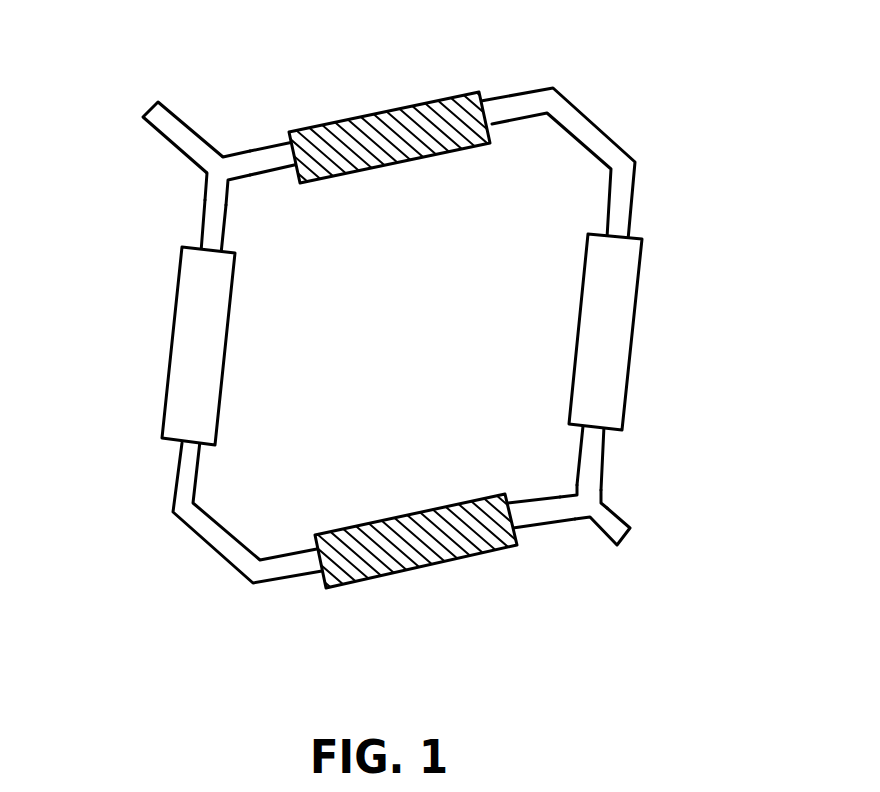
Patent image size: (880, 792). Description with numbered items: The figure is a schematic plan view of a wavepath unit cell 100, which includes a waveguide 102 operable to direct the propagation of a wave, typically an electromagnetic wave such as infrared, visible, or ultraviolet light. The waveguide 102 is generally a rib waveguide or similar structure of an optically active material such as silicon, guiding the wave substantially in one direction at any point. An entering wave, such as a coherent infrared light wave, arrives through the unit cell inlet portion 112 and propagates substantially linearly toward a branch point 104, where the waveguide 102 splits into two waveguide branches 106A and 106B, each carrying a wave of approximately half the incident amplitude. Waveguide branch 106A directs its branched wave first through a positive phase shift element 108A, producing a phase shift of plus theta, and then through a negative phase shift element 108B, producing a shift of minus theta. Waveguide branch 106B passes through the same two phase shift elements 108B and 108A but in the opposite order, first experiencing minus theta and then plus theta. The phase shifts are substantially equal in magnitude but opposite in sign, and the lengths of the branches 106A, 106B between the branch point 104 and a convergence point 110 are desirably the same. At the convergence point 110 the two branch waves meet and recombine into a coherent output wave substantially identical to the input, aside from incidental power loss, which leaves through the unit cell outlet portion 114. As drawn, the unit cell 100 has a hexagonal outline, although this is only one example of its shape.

The wavepath unit cell 100 is at (604, 72).
The waveguide 102 is at (158, 476).
The branch point 104 is at (221, 176).
The waveguide branch 106A is at (273, 135).
The waveguide branch 106B is at (190, 218).
The phase shift element 108A is at (388, 130).
The phase shift element 108B is at (187, 345).
The convergence point 110 is at (588, 502).
The unit cell inlet portion 112 is at (188, 121).
The unit cell outlet portion 114 is at (598, 530).